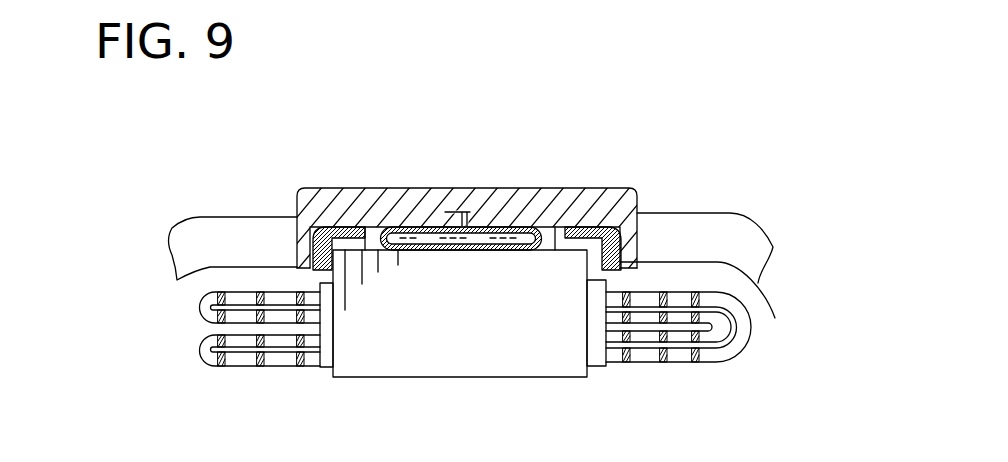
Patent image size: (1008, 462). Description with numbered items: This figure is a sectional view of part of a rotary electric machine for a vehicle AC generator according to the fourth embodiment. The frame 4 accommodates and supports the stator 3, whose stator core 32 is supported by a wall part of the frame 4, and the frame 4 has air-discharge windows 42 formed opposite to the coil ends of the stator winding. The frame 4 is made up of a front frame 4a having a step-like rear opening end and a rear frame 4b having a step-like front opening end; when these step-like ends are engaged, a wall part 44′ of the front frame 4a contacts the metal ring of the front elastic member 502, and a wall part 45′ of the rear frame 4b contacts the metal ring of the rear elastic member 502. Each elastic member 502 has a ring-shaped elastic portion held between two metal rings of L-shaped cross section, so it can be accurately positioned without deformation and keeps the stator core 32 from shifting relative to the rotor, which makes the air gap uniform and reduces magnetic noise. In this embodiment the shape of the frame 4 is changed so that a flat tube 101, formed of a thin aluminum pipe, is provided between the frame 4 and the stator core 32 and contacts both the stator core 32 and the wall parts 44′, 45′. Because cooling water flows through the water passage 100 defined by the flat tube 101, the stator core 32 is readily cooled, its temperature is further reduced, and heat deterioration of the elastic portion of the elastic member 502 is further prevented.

The stator 3 is at (665, 380).
The frame 4 is at (710, 197).
The front frame 4a is at (357, 184).
The rear frame 4b is at (513, 184).
The air-discharge window 42 is at (195, 240).
The wall part of the front frame 44′ is at (313, 207).
The wall part of the rear frame 45′ is at (625, 200).
The elastic member 502 is at (305, 228).
The stator core 32 is at (508, 345).
The water passage 100 is at (417, 253).
The flat tube 101 is at (457, 253).